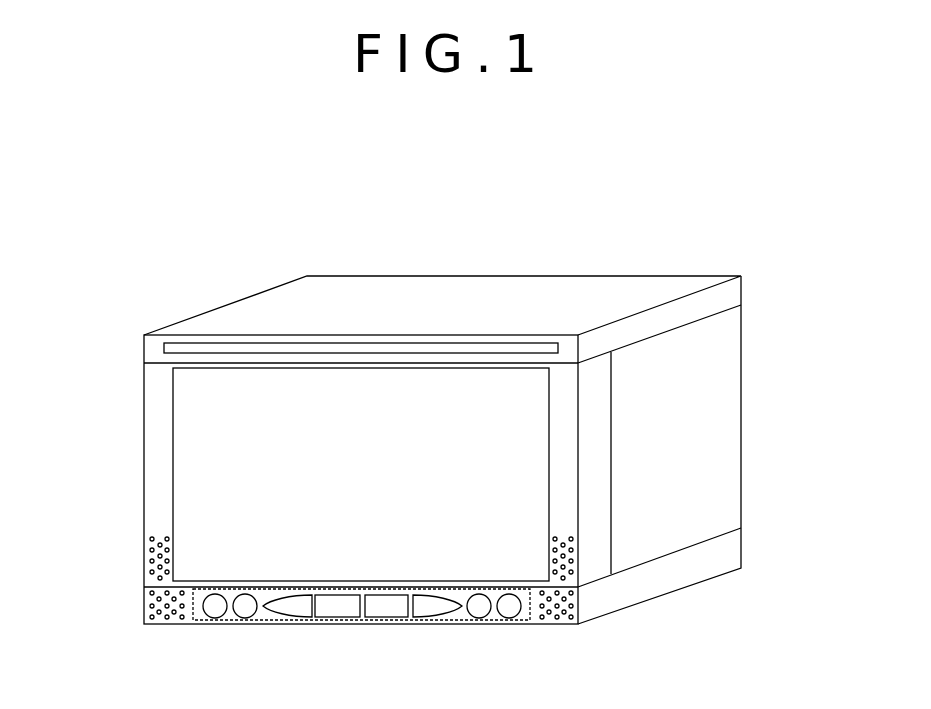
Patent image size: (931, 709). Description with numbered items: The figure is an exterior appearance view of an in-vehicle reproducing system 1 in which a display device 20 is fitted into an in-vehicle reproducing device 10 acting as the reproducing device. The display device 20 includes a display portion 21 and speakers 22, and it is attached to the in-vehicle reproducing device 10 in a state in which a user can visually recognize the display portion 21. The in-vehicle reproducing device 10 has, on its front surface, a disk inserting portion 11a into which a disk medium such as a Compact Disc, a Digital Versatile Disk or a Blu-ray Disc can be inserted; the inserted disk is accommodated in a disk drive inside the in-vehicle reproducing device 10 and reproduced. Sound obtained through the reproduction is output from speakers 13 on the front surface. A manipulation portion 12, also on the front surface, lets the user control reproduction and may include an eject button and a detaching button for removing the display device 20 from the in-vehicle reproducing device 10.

The in-vehicle reproducing system 1 is at (491, 203).
The in-vehicle reproducing device 10 is at (745, 307).
The disk inserting portion 11a is at (164, 349).
The manipulation portion 12 is at (480, 624).
The speakers 13 is at (177, 621).
The display device 20 is at (136, 571).
The display portion 21 is at (173, 445).
The speakers 22 is at (151, 549).